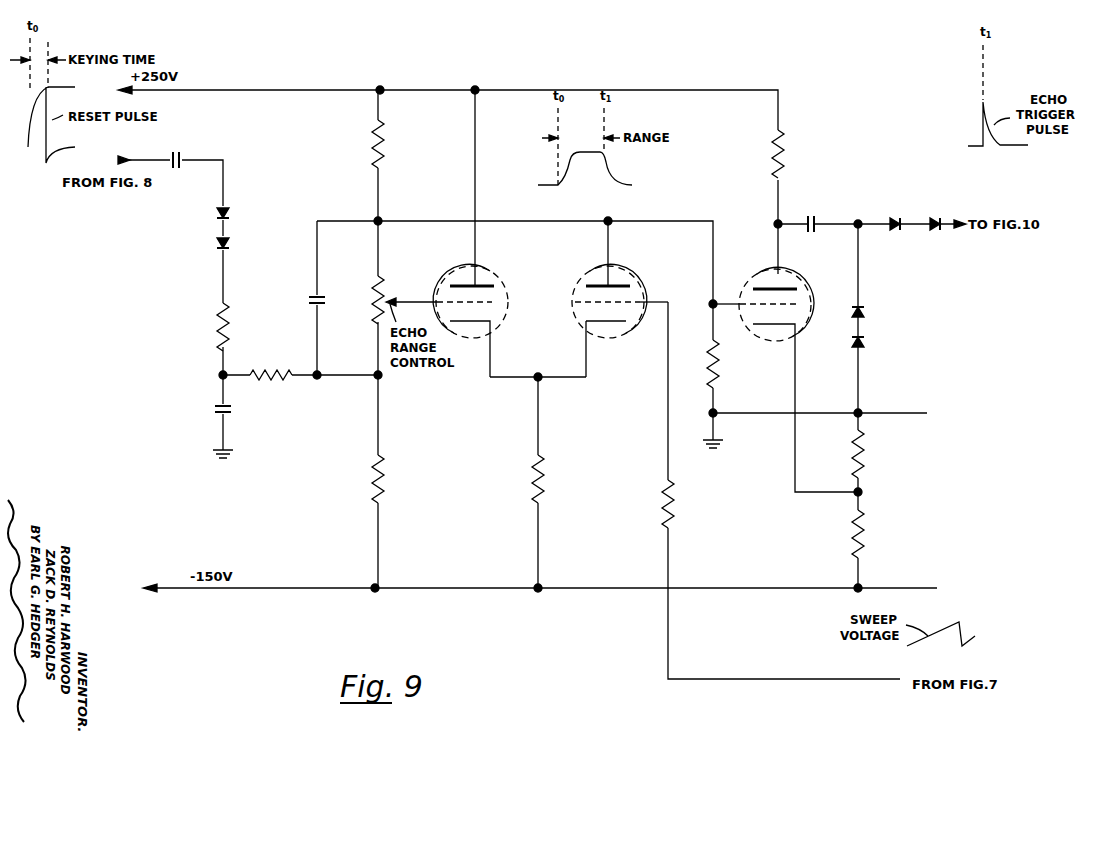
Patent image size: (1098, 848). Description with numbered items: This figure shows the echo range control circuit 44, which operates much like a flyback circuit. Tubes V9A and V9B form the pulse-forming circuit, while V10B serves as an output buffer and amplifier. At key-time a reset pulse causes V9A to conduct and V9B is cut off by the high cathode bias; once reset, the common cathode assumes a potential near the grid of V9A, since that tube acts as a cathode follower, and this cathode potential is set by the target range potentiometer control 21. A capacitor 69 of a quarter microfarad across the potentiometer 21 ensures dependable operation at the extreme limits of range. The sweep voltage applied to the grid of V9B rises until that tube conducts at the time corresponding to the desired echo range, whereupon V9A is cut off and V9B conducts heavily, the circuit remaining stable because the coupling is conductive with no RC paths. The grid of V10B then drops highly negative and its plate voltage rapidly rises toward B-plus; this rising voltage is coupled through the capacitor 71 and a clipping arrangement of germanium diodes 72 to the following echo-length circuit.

The target range potentiometer control 21 is at (373, 293).
The echo range control circuit 44 is at (551, 615).
The capacitor 69 is at (310, 303).
The capacitor 71 is at (812, 219).
The germanium diodes 72 is at (928, 229).
The tube V9A is at (490, 276).
The tube V9B is at (616, 270).
The tube V10B is at (788, 276).